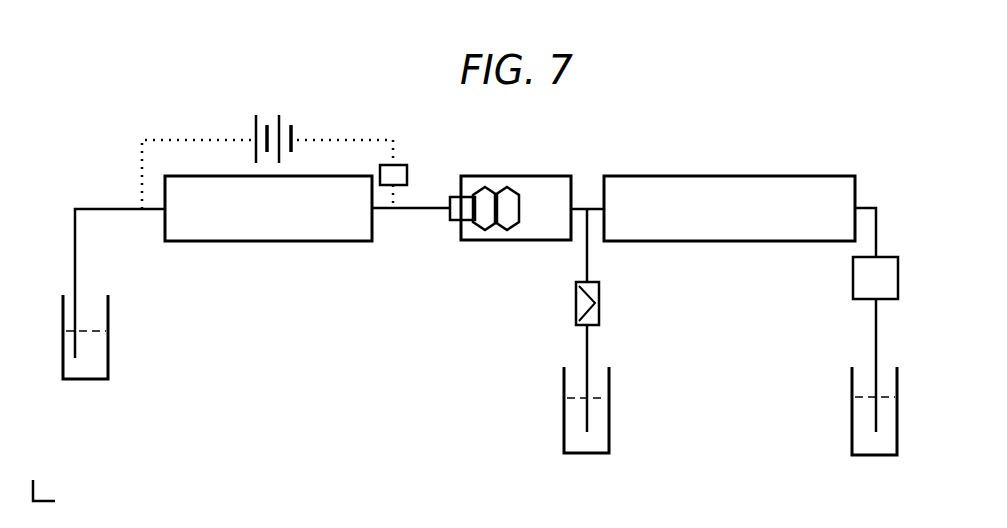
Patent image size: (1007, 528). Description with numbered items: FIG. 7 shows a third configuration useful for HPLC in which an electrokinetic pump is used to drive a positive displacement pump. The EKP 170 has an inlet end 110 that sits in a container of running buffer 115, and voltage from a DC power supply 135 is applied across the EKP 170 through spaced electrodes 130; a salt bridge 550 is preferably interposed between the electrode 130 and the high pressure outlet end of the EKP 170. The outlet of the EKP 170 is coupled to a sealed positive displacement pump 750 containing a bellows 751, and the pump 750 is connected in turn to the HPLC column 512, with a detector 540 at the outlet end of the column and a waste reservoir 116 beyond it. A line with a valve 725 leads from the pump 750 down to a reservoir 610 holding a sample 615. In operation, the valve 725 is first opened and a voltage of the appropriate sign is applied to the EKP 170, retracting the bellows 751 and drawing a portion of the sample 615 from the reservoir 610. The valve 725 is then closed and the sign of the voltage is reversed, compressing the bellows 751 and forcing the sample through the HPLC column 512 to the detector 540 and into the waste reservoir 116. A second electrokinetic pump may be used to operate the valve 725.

The inlet end 110 is at (74, 250).
The running buffer 115 is at (98, 355).
The waste reservoir 116 is at (852, 435).
The spaced electrodes 130 is at (142, 168).
The DC power supply 135 is at (283, 127).
The EKP 170 is at (352, 207).
The HPLC column 512 is at (837, 208).
The detector 540 is at (895, 284).
The salt bridge 550 is at (407, 178).
The reservoir 610 is at (610, 423).
The sample 615 is at (573, 440).
The valve 725 is at (600, 303).
The sealed positive displacement pump 750 is at (504, 226).
The bellows 751 is at (478, 231).